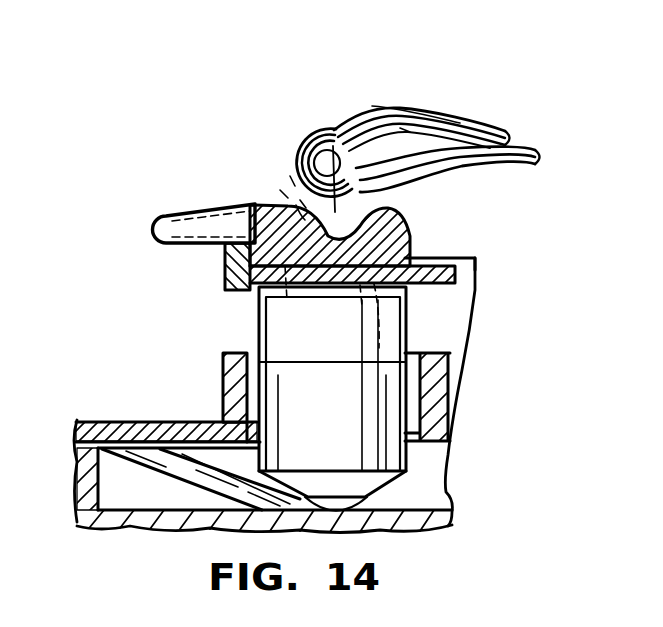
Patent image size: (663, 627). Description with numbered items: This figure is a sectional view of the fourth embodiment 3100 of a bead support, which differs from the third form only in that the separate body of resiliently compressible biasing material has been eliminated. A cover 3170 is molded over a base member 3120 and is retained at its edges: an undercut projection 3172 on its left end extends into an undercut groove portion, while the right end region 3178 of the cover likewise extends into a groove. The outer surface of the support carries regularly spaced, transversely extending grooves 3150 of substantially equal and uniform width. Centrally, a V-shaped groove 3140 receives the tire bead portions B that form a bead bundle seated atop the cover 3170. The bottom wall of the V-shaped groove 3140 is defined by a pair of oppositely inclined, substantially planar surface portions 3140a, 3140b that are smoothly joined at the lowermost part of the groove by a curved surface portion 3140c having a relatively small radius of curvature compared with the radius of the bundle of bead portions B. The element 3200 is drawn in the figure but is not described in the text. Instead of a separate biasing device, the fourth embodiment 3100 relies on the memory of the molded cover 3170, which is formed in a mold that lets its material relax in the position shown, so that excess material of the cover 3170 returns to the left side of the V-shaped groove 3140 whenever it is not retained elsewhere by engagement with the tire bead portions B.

The fourth embodiment 3100 is at (257, 152).
The base member 3120 is at (258, 310).
The V-shaped groove 3140 is at (383, 187).
The planar surface portion 3140a is at (292, 300).
The planar surface portion 3140b is at (384, 338).
The curved surface portion 3140c is at (292, 200).
The grooves 3150 is at (284, 206).
The cover 3170 is at (165, 217).
The undercut projection 3172 is at (224, 270).
The right end region 3178 is at (408, 262).
The fiber bundle 3200 is at (372, 106).
The tire bead portions B is at (405, 130).